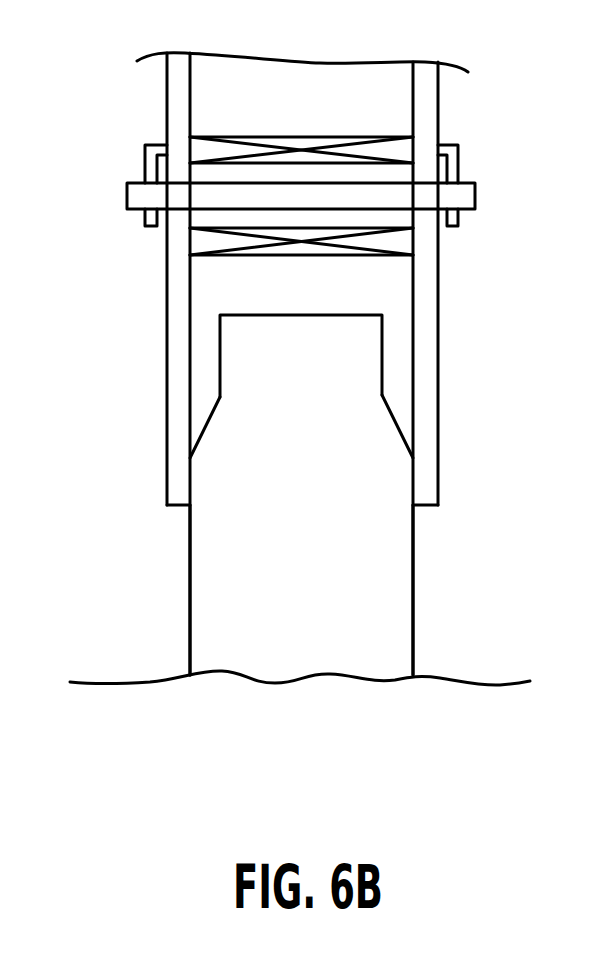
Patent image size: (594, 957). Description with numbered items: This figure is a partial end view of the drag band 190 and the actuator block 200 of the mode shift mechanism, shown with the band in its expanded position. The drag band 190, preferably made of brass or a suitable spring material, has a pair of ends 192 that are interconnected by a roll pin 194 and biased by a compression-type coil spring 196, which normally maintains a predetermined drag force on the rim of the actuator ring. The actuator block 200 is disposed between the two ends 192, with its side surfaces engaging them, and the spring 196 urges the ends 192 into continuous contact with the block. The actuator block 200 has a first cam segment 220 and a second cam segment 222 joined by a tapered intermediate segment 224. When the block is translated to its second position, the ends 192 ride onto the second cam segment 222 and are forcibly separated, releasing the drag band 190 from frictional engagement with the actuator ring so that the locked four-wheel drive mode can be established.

The drag band 190 is at (452, 106).
The ends 192 is at (177, 293).
The roll pin 194 is at (463, 196).
The coil spring 196 is at (300, 140).
The actuator block 200 is at (338, 646).
The first cam segment 220 is at (342, 363).
The second cam segment 222 is at (382, 553).
The tapered intermediate segment 224 is at (368, 430).